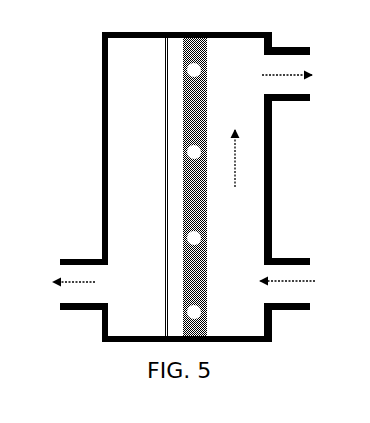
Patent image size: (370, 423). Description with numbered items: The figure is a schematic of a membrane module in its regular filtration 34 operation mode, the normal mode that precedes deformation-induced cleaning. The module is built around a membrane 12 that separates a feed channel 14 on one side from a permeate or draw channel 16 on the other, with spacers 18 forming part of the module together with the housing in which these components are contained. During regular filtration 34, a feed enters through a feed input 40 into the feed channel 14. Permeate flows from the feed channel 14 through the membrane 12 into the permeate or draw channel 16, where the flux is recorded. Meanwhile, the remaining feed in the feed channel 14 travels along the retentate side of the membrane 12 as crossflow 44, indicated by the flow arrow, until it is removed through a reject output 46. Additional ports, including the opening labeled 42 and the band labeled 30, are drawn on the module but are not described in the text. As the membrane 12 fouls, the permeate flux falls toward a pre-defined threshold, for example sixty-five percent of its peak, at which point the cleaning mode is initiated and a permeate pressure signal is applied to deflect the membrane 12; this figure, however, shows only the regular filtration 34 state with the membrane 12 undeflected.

The regular filtration 34 is at (88, 40).
The reject output 46 is at (285, 100).
The first inlet 42 is at (72, 260).
The feed input 40 is at (300, 259).
The porous membrane 30 is at (197, 212).
The spacer 18 is at (187, 149).
The membrane 12 is at (177, 208).
The permeate or draw channel 16 is at (148, 250).
The feed channel 14 is at (247, 250).
The crossflow 44 is at (237, 166).